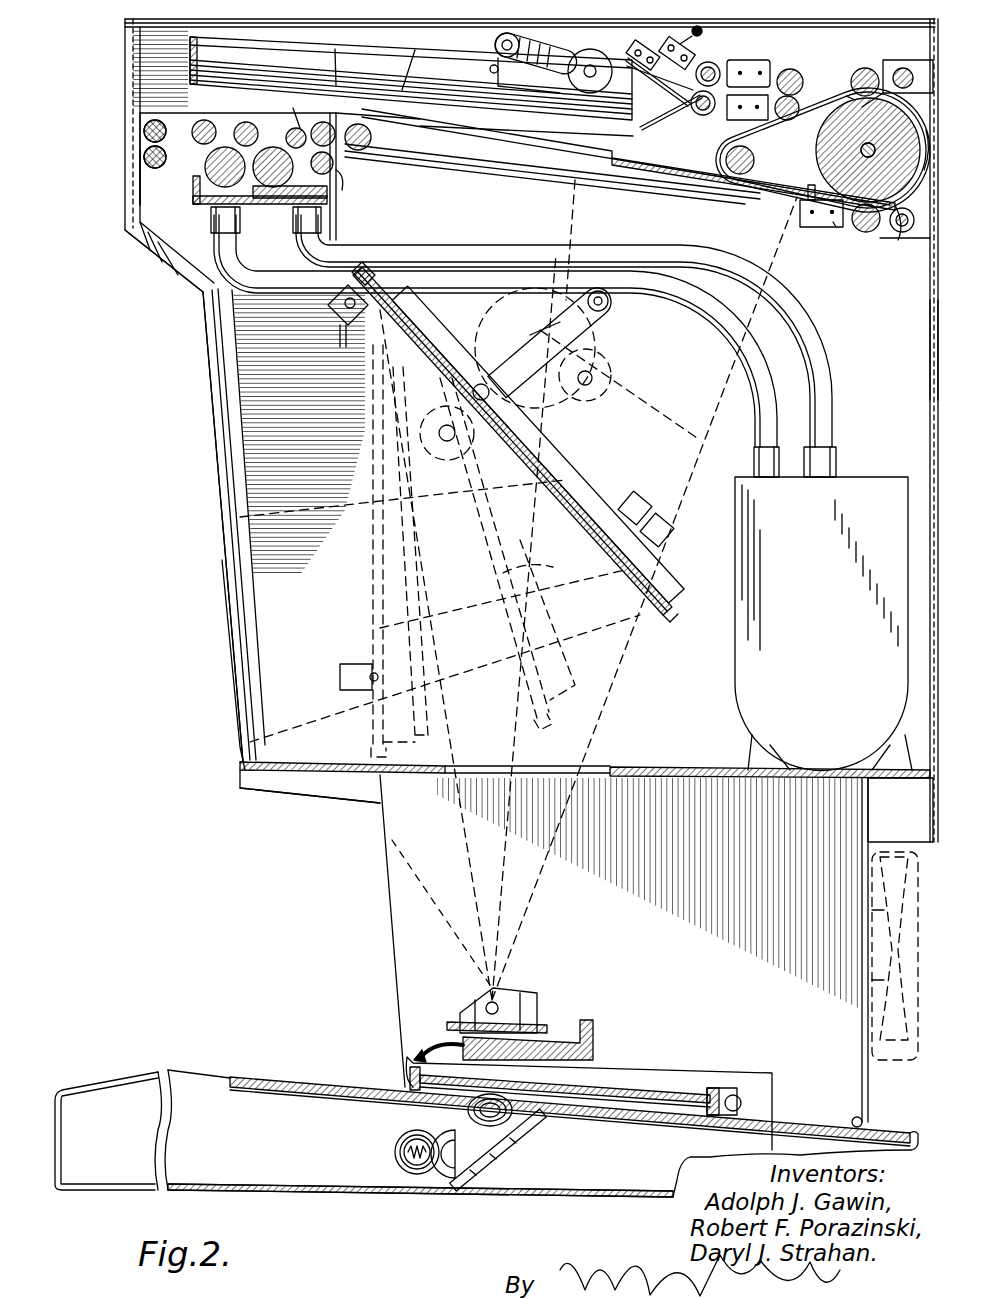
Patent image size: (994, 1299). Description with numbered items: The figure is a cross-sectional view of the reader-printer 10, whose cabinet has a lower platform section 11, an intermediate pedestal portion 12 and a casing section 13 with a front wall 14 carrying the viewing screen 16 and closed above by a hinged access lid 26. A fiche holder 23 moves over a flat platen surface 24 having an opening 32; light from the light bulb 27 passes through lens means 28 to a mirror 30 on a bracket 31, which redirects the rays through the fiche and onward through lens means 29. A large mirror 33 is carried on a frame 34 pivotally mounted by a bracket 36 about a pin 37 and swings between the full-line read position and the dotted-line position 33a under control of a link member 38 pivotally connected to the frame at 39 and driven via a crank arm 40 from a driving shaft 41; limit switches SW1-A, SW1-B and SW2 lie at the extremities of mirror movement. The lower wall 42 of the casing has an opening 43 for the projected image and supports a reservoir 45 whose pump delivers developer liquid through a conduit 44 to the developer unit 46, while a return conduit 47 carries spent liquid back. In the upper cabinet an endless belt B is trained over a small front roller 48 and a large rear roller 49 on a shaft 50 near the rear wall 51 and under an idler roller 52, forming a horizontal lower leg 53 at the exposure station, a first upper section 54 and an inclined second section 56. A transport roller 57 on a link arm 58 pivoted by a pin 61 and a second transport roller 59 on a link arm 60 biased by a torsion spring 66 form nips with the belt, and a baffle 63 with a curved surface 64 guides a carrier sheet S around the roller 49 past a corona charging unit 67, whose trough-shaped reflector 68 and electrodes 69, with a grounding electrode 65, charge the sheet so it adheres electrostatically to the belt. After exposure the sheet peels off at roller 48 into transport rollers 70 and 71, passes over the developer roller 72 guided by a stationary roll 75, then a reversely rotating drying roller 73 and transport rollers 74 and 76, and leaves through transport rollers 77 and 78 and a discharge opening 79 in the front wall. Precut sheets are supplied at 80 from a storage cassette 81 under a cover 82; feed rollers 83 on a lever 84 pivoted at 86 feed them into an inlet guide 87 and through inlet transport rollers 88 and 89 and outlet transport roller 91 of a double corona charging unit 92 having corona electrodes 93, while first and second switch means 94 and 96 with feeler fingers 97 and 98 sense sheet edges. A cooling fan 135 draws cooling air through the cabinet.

The reader-printer 10 is at (325, 802).
The lower platform section 11 is at (283, 1168).
The intermediate pedestal portion 12 is at (392, 912).
The casing section 13 is at (230, 342).
The front wall 14 is at (138, 164).
The viewing screen 16 is at (230, 630).
The fiche holder 23 is at (640, 1085).
The platen surface 24 is at (263, 1064).
The hinged access lid 26 is at (180, 24).
The light bulb 27 is at (394, 1152).
The lens means 28 is at (466, 1112).
The lens means 29 is at (512, 1010).
The mirror 30 is at (492, 1150).
The bracket 31 is at (535, 1115).
The opening 32 is at (566, 1036).
The large mirror 33 is at (608, 575).
The dotted line position 33a is at (368, 594).
The mirror frame 34 is at (550, 572).
The bracket 36 is at (372, 322).
The pin 37 is at (342, 330).
The link member 38 is at (500, 316).
The pivotal connection 39 is at (495, 350).
The crank arm 40 is at (612, 360).
The driving shaft 41 is at (588, 303).
The lower wall 42 is at (638, 768).
The opening 43 is at (536, 768).
The conduit 44 is at (660, 262).
The reservoir 45 is at (760, 703).
The developer unit 46 is at (187, 217).
The return conduit 47 is at (470, 272).
The roller 48 is at (362, 152).
The roller 49 is at (848, 95).
The shaft 50 is at (860, 152).
The rear wall 51 is at (930, 322).
The idler roller 52 is at (726, 160).
The lower leg 53 is at (443, 160).
The first section 54 is at (596, 156).
The second section 56 is at (790, 137).
The transport roller 57 is at (864, 68).
The link arm 58 is at (888, 60).
The transport roller 59 is at (862, 232).
The link arm 60 is at (892, 232).
The pin 61 is at (905, 68).
The direction-changing baffle 63 is at (912, 232).
The curved surface 64 is at (908, 118).
The grounding electrode 65 is at (807, 188).
The torsion spring 66 is at (890, 240).
The corona charging unit 67 is at (836, 232).
The trough-shaped reflector 68 is at (803, 226).
The corona charging electrodes 69 is at (832, 214).
The transport roller 70 is at (350, 185).
The transport roller 71 is at (325, 122).
The developer roller 72 is at (288, 140).
The drying roller 73 is at (215, 160).
The transport roller 74 is at (250, 122).
The stationary roll 75 is at (303, 120).
The transport roller 76 is at (195, 122).
The transport roller 77 is at (138, 178).
The transport roller 78 is at (142, 124).
The discharge opening 79 is at (142, 152).
The supply of carrier sheets 80 is at (419, 58).
The storage cassette 81 is at (337, 56).
The cover 82 is at (364, 58).
The feed rollers 83 is at (594, 63).
The lever 84 is at (548, 48).
The pivot 86 is at (495, 44).
The inlet guide 87 is at (650, 112).
The inlet transport roller 88 is at (748, 70).
The inlet transport roller 89 is at (699, 114).
The outlet transport roller 91 is at (803, 100).
The double corona charging unit 92 is at (758, 62).
The corona electrodes 93 is at (740, 112).
The first switch means 94 is at (640, 45).
The second switch means 96 is at (672, 40).
The feeler arm 97 is at (658, 85).
The feeler arm 98 is at (712, 62).
The cooling fan 135 is at (880, 1022).
The belt B is at (660, 162).
The carrier sheet S is at (682, 200).
The limit switch SW1-A is at (658, 492).
The limit switch SW1-B is at (670, 537).
The limit switch SW2 is at (338, 670).